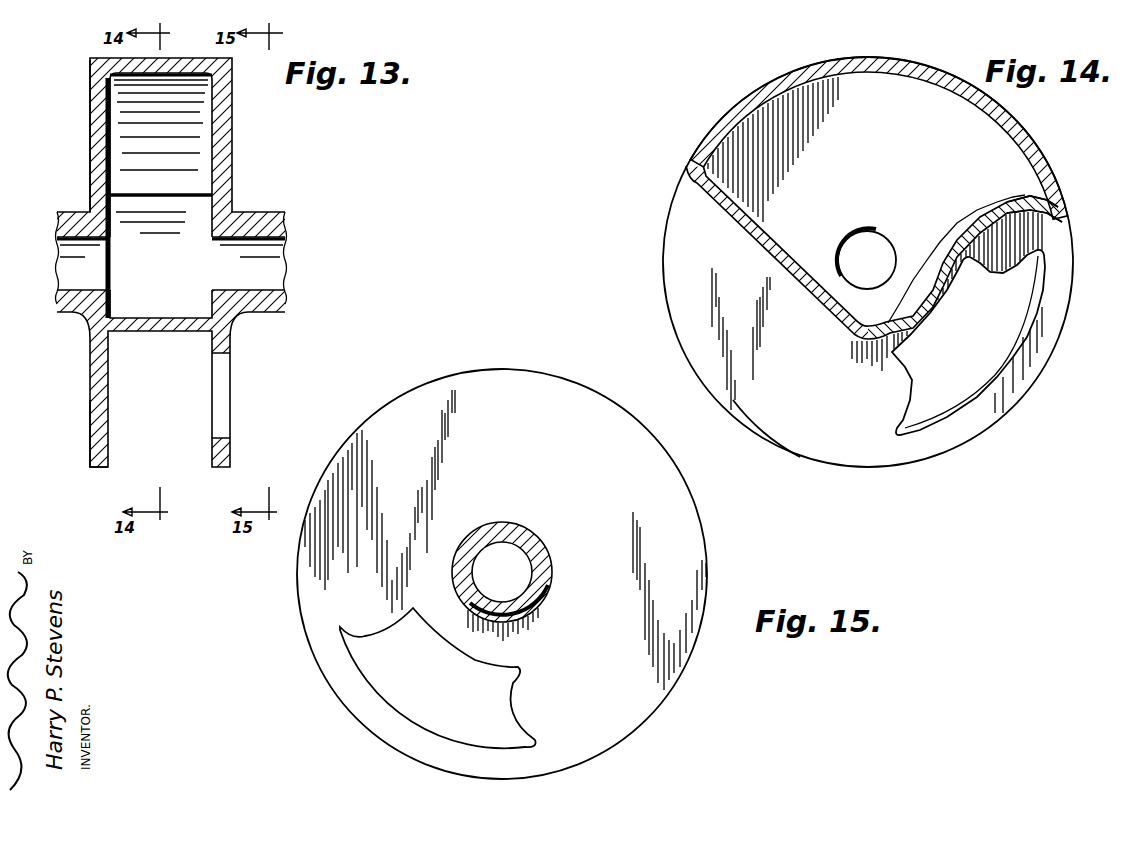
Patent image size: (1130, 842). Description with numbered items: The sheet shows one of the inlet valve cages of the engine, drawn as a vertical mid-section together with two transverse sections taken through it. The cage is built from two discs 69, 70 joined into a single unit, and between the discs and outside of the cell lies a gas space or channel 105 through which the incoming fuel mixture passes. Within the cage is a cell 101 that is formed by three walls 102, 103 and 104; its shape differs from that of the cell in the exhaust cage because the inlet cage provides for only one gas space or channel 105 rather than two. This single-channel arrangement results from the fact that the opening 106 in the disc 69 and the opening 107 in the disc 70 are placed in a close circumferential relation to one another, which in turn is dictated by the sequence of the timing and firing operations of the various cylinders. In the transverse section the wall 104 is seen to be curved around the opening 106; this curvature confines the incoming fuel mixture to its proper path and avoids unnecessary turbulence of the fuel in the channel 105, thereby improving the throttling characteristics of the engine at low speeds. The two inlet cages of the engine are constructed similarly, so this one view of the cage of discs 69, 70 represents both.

In FIG. 13, the disc 69 is at (88, 128).
In FIG. 14, the disc 69 is at (1073, 230).
In FIG. 13, the disc 70 is at (225, 133).
In FIG. 15, the disc 70 is at (523, 373).
In FIG. 13, the cell 101 is at (185, 210).
In FIG. 14, the cell 101 is at (973, 122).
In FIG. 14, the wall 102 is at (880, 77).
In FIG. 14, the wall 103 is at (737, 208).
In FIG. 14, the wall 104 is at (988, 197).
In FIG. 13, the gas space or channel 105 is at (182, 448).
In FIG. 14, the gas space or channel 105 is at (782, 432).
In FIG. 14, the opening 106 is at (973, 392).
In FIG. 13, the opening 107 is at (222, 380).
In FIG. 15, the opening 107 is at (435, 725).